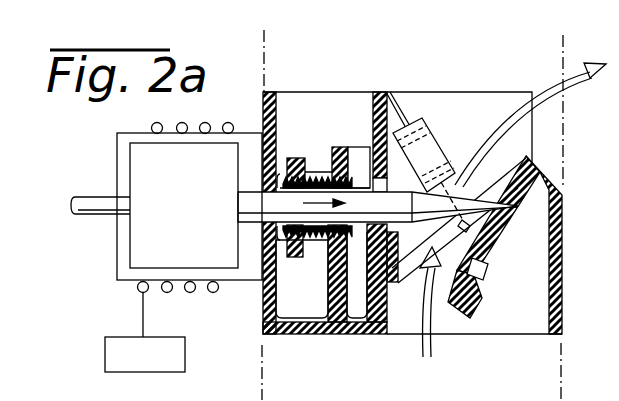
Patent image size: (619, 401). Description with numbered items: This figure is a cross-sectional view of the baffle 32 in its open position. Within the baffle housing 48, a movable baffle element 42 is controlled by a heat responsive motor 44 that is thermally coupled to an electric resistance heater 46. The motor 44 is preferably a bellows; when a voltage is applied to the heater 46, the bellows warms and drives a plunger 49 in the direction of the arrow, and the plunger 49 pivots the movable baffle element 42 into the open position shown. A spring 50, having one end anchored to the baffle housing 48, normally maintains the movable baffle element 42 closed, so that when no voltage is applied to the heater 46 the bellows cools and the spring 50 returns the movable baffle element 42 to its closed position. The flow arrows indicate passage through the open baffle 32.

The baffle 32 is at (476, 80).
The movable baffle element 42 is at (488, 275).
The heat responsive motor 44 is at (140, 230).
The electric resistance heater 46 is at (150, 125).
The baffle housing 48 is at (372, 118).
The plunger 49 is at (385, 212).
The spring 50 is at (423, 128).